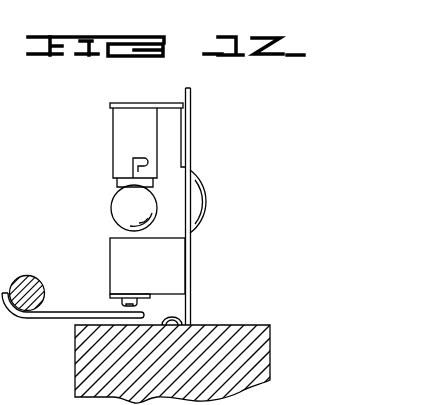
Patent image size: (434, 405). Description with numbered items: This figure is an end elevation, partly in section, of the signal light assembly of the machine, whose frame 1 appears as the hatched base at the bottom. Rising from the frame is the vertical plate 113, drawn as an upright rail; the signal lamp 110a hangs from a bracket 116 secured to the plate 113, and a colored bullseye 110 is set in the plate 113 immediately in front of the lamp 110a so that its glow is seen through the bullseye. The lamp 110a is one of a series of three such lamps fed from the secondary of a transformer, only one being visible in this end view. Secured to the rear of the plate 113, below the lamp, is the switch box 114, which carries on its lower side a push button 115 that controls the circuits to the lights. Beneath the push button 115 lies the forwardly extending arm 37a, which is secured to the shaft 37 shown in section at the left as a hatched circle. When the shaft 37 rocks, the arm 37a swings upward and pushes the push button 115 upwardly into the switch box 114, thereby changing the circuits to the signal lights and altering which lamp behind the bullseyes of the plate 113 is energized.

The frame 1 is at (270, 344).
The shaft 37 is at (32, 280).
The arm 37a is at (92, 302).
The colored bullseye 110 is at (208, 196).
The signal lamp 110a is at (125, 200).
The vertical plate 113 is at (191, 147).
The switch box 114 is at (176, 264).
The push button 115 is at (128, 297).
The bracket 116 is at (168, 103).